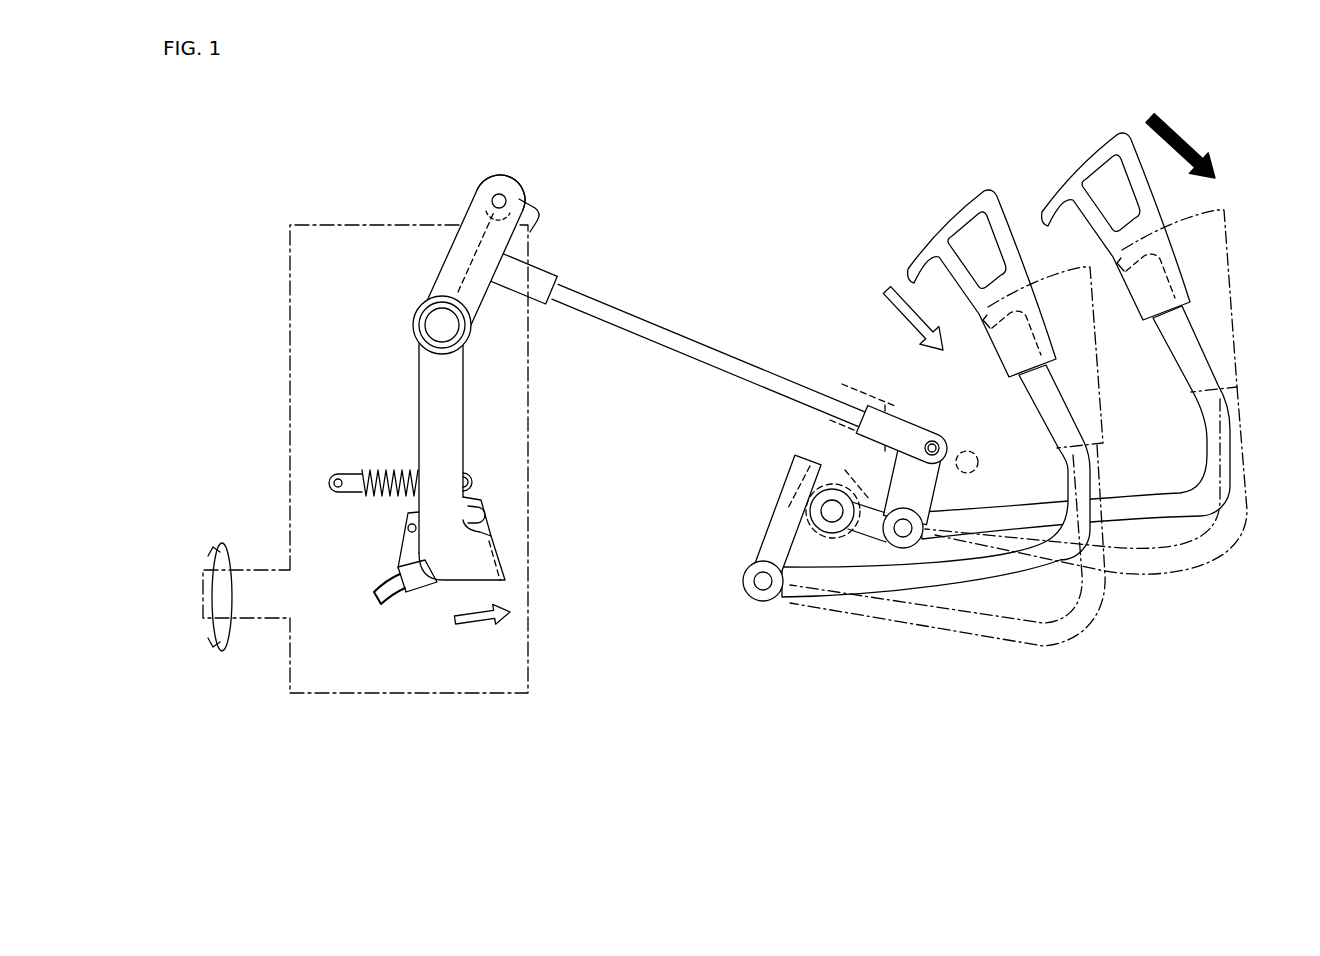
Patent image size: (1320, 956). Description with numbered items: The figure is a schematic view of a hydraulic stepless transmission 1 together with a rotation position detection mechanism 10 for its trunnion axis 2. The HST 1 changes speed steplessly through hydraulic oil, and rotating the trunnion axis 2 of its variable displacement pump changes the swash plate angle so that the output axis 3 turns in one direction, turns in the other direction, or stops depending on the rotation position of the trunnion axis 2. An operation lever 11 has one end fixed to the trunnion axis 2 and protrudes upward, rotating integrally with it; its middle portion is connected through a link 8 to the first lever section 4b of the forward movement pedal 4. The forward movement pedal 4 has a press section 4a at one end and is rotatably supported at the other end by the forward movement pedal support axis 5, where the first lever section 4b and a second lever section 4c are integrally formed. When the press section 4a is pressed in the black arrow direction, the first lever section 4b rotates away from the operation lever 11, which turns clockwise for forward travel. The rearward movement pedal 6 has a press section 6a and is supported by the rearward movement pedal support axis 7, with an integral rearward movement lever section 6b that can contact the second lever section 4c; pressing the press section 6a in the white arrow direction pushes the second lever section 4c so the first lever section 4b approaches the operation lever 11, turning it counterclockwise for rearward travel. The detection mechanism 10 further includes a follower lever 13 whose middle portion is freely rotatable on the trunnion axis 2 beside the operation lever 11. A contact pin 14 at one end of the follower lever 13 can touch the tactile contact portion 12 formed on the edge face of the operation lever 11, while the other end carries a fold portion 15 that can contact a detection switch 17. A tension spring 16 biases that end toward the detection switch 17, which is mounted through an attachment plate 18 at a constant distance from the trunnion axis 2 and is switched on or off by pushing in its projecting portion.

The hydraulic stepless transmission (HST) 1 is at (349, 224).
The trunnion axis 2 is at (430, 327).
The output axis 3 is at (203, 597).
The forward movement pedal 4 is at (1228, 423).
The press section 4a is at (1067, 185).
The first lever section 4b is at (938, 476).
The second lever section 4c is at (812, 502).
The forward movement pedal support axis 5 is at (898, 547).
The rearward movement pedal 6 is at (1085, 467).
The press section 6a is at (915, 262).
The rearward movement lever section 6b is at (785, 512).
The rearward movement pedal support axis 7 is at (745, 582).
The link 8 is at (667, 337).
The rotation position detection mechanism 10 is at (614, 211).
The operation lever 11 is at (538, 219).
The tactile contact portion 12 is at (484, 208).
The follower lever 13 is at (462, 420).
The contact pin 14 is at (490, 195).
The fold portion 15 is at (502, 552).
The tension spring 16 is at (382, 470).
The detection switch 17 is at (410, 567).
The attachment plate 18 is at (485, 524).